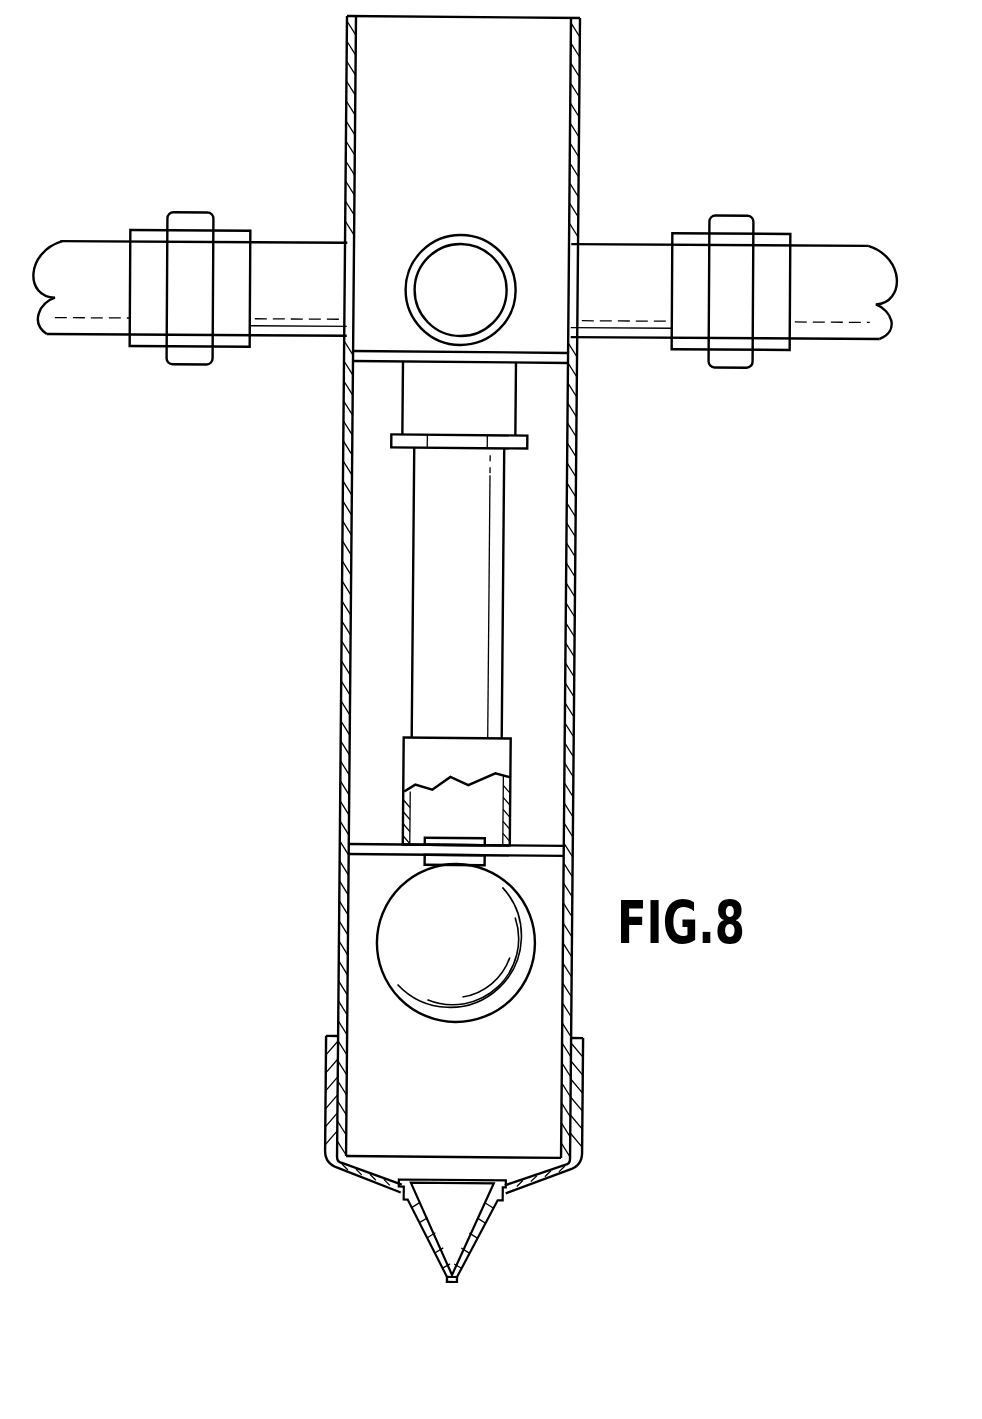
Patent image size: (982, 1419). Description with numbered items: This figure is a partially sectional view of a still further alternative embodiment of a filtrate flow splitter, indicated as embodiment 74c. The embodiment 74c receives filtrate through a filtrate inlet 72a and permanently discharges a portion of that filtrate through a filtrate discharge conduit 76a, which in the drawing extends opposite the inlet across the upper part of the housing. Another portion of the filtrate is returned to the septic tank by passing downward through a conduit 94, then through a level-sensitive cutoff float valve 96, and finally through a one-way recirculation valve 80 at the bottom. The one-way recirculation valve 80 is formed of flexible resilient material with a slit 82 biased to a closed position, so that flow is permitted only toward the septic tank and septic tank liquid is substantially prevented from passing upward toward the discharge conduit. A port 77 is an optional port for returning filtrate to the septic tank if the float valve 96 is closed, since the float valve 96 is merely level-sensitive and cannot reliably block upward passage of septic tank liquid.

The flow splitter embodiment 74c is at (298, 708).
The filtrate discharge conduit 76a is at (90, 242).
The filtrate inlet 72a is at (832, 246).
The port 77 is at (423, 268).
The conduit 94 is at (413, 615).
The level-sensitive cutoff float valve 96 is at (453, 1021).
The one-way recirculation valve 80 is at (482, 1237).
The slit 82 is at (452, 1284).